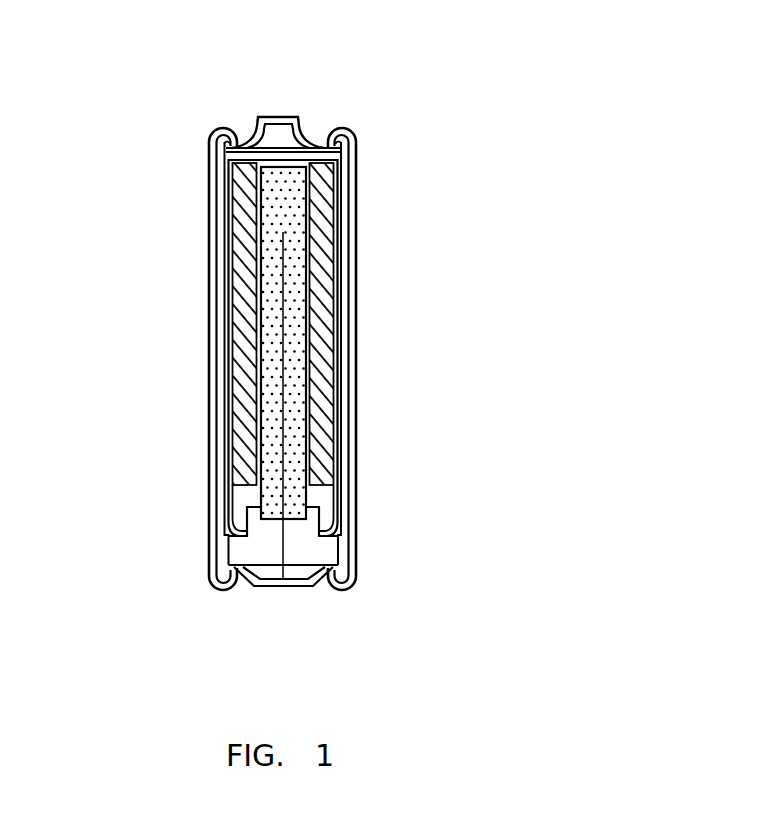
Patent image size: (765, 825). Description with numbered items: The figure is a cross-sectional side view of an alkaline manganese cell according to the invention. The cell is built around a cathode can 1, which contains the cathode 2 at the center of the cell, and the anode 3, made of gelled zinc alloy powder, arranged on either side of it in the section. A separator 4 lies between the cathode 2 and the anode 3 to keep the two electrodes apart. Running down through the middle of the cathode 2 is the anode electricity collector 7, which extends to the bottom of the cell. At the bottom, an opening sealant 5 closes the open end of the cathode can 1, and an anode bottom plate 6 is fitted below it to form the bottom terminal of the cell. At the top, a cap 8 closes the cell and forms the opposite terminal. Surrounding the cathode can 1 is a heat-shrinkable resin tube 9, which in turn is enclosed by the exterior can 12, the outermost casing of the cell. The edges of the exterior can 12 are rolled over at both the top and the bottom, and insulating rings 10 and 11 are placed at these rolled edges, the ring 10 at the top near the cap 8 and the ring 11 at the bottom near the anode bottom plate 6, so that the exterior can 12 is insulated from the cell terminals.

The cathode can 1 is at (338, 182).
The cathode 2 is at (292, 288).
The anode 3 is at (325, 352).
The separator 4 is at (338, 410).
The opening sealant 5 is at (327, 554).
The anode bottom plate 6 is at (313, 586).
The anode electricity collector 7 is at (283, 345).
The cap 8 is at (257, 117).
The heat-shrinkable resin tube 9 is at (225, 183).
The insulating ring 10 is at (338, 150).
The insulating ring 11 is at (232, 572).
The exterior can 12 is at (216, 443).